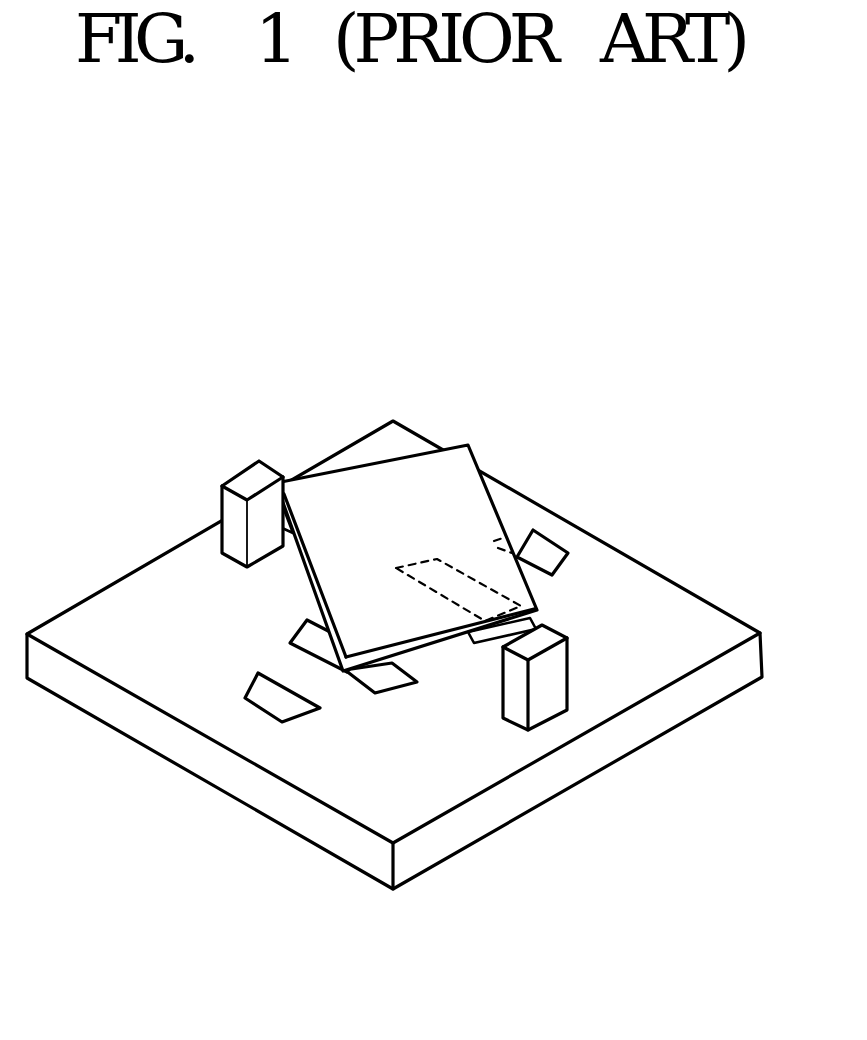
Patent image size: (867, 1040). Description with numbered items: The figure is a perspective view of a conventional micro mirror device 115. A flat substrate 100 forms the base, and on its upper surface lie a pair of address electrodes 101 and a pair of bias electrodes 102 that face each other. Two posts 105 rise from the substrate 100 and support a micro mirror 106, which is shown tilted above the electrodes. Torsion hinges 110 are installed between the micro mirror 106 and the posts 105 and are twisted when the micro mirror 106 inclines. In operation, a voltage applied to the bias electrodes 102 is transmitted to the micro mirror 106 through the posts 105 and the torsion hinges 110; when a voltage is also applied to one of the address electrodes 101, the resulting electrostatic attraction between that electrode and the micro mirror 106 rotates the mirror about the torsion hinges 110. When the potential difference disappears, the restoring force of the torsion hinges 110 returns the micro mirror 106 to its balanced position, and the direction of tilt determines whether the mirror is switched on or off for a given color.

The substrate 100 is at (113, 710).
The address electrodes 101 is at (521, 624).
The bias electrodes 102 is at (260, 707).
The posts 105 is at (242, 473).
The micro mirror 106 is at (447, 463).
The torsion hinges 110 is at (534, 623).
The micro mirror device 115 is at (394, 606).